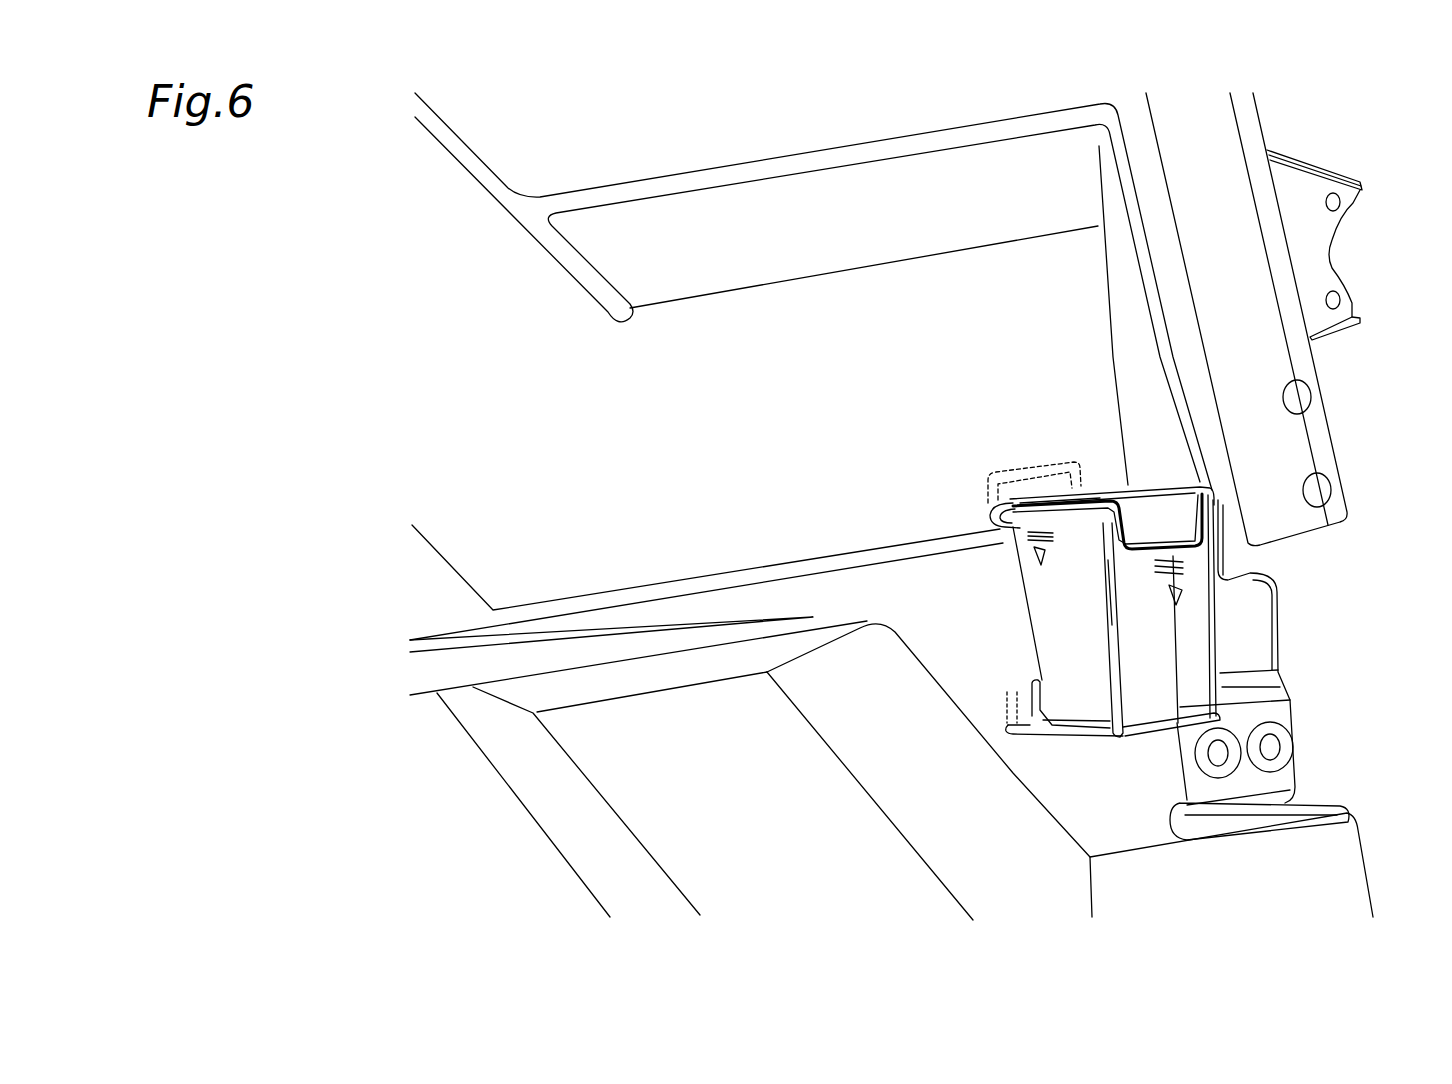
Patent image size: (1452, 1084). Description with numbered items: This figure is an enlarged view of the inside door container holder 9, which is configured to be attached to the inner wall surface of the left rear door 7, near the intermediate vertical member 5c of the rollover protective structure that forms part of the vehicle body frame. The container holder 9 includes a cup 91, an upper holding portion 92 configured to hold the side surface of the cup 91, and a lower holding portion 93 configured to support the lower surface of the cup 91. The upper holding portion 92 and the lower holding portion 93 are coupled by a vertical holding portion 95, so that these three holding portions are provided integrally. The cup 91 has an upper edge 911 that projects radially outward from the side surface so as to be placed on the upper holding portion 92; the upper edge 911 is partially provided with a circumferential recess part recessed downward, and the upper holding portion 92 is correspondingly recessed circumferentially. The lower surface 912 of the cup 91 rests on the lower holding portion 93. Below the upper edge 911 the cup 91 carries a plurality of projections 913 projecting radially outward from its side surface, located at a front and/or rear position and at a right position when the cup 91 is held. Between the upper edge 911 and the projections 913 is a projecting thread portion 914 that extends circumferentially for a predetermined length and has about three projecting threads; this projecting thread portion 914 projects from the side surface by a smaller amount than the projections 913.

The rear door 7 is at (842, 325).
The intermediate vertical member 5c is at (1205, 137).
The container holder 9 is at (1030, 437).
The cup 91 is at (1193, 653).
The upper edge 911 is at (1085, 512).
The lower surface 912 is at (1147, 720).
The projections 913 is at (1033, 558).
The projecting thread portion 914 is at (1027, 535).
The upper holding portion 92 is at (1052, 526).
The lower holding portion 93 is at (1043, 735).
The vertical holding portion 95 is at (1112, 625).